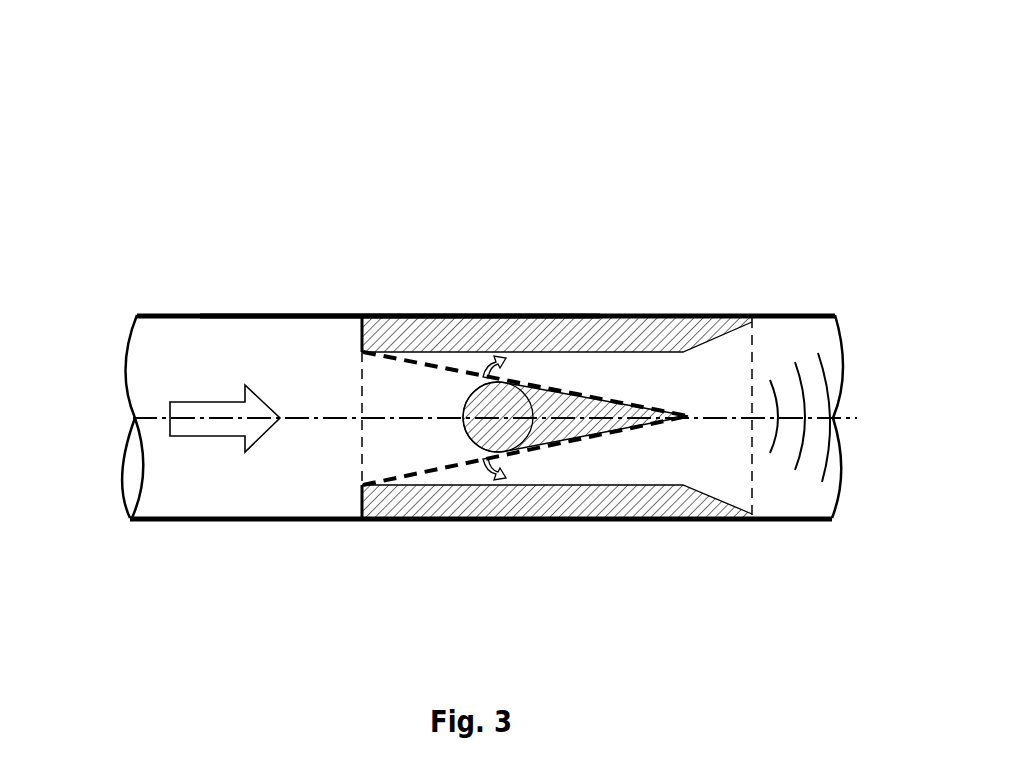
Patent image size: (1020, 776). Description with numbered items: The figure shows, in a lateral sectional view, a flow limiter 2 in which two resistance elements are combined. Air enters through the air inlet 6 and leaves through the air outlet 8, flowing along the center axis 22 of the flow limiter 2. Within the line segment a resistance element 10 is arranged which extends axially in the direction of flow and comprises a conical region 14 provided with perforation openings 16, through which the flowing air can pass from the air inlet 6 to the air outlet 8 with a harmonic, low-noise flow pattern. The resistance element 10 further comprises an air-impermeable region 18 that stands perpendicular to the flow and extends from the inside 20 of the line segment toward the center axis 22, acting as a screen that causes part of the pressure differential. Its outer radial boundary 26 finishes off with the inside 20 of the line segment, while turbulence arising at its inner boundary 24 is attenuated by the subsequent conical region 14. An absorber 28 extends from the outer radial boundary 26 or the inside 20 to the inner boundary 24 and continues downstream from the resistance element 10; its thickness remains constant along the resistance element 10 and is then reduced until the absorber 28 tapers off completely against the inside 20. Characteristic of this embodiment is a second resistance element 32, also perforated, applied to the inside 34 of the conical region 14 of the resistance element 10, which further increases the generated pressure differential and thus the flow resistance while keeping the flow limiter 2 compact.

The flow limiter 2 is at (510, 112).
The air inlet 6 is at (118, 361).
The air outlet 8 is at (852, 376).
The resistance element 10 is at (447, 477).
The conical region 14 is at (406, 355).
The perforation openings 16 is at (532, 378).
The air-impermeable region 18 is at (362, 503).
The inside of the line segment 20 is at (207, 510).
The center axis 22 is at (833, 418).
The inner boundary 24 is at (358, 350).
The outer radial boundary 26 is at (349, 313).
The absorber 28 is at (558, 497).
The second resistance element 32 is at (463, 428).
The inside of the conical region 34 is at (444, 379).